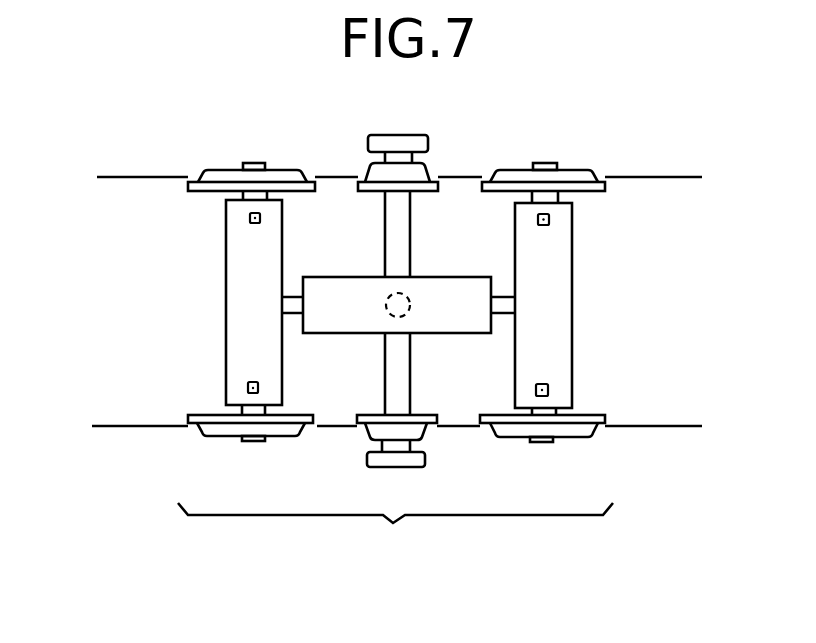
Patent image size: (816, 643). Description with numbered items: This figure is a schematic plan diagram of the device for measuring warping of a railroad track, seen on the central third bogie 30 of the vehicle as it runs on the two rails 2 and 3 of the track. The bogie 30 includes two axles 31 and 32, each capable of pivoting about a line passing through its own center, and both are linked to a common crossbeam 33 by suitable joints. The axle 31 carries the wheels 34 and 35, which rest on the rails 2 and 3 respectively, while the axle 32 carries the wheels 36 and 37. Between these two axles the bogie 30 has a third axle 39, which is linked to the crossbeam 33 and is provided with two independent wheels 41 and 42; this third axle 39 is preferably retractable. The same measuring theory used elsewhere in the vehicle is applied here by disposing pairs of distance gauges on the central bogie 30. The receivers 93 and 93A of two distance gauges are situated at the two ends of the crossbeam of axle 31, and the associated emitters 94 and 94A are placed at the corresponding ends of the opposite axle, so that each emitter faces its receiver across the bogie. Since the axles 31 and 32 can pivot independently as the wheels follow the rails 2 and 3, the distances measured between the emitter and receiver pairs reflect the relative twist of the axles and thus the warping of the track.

The rail 2 is at (121, 177).
The rail 3 is at (118, 427).
The third bogie 30 is at (395, 535).
The axle 31 is at (240, 298).
The axle 32 is at (552, 300).
The crossbeam 33 is at (448, 292).
The wheel 34 is at (223, 177).
The wheel 35 is at (223, 427).
The wheel 36 is at (587, 176).
The wheel 37 is at (568, 430).
The third axle 39 is at (395, 367).
The independent wheel 41 is at (370, 172).
The independent wheel 42 is at (380, 429).
The receiver 93 is at (250, 218).
The receiver 93A is at (248, 388).
The emitter 94 is at (550, 222).
The emitter 94A is at (549, 392).